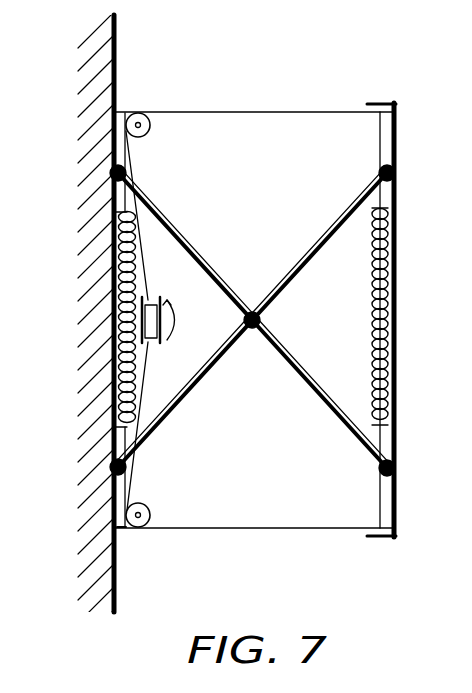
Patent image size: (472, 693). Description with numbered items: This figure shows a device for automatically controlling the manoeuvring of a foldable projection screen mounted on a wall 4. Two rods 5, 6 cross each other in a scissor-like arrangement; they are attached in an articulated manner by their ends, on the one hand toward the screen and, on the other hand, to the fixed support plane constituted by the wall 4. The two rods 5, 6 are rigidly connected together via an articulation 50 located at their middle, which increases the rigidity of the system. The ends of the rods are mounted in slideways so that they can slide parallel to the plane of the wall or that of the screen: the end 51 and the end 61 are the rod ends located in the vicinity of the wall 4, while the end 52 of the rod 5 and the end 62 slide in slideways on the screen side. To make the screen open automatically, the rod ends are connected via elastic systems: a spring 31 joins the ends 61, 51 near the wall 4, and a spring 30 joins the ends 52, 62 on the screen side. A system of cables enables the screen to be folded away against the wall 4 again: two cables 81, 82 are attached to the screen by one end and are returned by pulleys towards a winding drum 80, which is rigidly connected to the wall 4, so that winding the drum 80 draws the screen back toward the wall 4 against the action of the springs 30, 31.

The wall 4 is at (117, 42).
The rod 5 is at (198, 382).
The rod 6 is at (182, 233).
The spring 30 is at (372, 350).
The spring 31 is at (112, 310).
The articulation 50 is at (258, 322).
The end 51 is at (112, 462).
The end 52 is at (393, 172).
The end 61 is at (112, 170).
The lower rail pivot 62 is at (395, 468).
The winding drum 80 is at (152, 298).
The cable 81 is at (236, 530).
The cable 82 is at (263, 110).